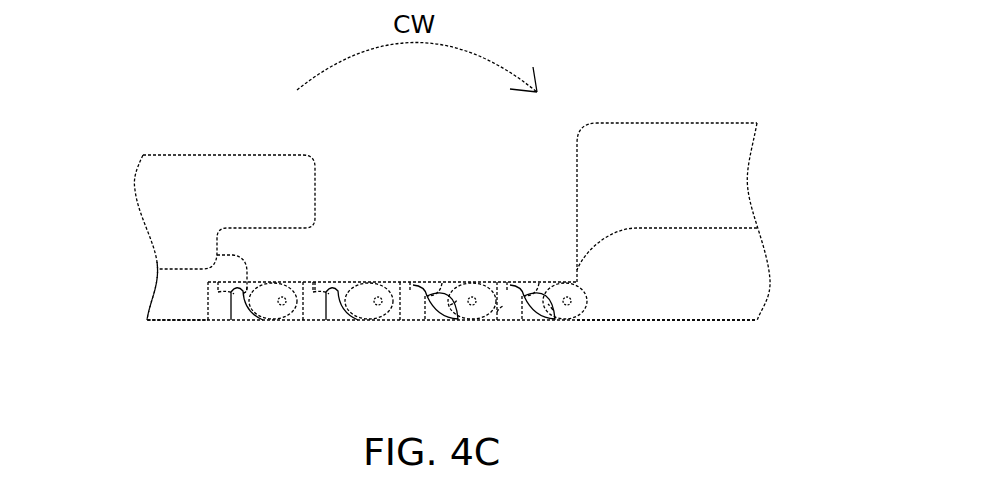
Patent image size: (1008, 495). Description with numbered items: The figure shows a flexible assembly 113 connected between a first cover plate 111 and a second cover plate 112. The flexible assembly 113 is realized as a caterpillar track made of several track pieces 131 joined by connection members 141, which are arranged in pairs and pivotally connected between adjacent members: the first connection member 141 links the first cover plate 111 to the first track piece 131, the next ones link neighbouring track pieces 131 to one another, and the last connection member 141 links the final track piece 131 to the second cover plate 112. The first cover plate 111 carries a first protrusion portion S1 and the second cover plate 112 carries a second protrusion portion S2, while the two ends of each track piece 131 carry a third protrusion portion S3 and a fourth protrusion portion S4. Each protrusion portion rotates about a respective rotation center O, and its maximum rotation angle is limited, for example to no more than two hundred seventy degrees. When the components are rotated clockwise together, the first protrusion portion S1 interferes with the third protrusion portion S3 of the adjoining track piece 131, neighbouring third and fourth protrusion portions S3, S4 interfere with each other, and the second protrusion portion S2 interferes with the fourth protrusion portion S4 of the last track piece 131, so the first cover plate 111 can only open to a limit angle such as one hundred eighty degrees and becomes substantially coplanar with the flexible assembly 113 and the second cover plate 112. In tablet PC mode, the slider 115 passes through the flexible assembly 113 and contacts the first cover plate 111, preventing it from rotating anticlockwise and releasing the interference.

The first cover plate 111 is at (683, 298).
The second cover plate 112 is at (173, 300).
The flexible assembly 113 is at (378, 192).
The slider 115 is at (225, 172).
The track piece 131 is at (318, 287).
The connection member 141 is at (248, 322).
The rotation center O is at (280, 297).
The first protrusion portion S1 is at (553, 310).
The second protrusion portion S2 is at (240, 293).
The third protrusion portion S3 is at (497, 312).
The fourth protrusion portion S4 is at (453, 307).